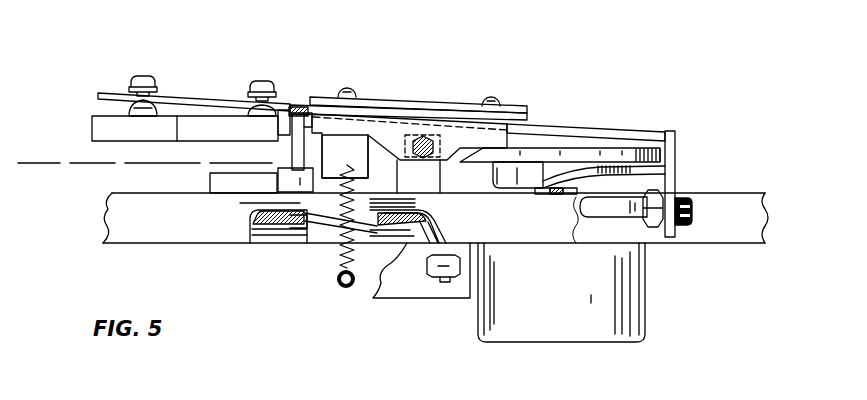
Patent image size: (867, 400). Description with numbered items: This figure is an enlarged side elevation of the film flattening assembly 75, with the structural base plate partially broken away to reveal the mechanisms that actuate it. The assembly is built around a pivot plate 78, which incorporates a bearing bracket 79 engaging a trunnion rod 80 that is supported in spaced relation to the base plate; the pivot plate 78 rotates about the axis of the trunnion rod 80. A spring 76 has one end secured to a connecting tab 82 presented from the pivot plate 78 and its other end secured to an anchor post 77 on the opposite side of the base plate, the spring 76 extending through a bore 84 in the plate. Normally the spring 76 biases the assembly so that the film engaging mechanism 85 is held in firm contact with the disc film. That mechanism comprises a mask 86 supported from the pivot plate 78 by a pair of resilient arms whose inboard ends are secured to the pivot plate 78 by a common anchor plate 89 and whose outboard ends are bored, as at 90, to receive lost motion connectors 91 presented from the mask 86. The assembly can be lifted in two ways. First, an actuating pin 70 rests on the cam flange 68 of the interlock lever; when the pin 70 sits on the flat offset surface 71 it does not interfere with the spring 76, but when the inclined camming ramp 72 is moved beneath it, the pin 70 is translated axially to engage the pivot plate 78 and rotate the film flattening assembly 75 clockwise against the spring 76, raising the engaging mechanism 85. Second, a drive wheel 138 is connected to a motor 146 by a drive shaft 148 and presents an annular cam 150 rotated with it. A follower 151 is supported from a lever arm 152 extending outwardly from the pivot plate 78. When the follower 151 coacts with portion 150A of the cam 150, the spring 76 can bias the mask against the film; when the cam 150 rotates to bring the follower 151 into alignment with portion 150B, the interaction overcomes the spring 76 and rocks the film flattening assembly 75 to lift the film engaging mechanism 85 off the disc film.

The film engaging mechanism 85 is at (206, 64).
The film flattening assembly 75 is at (614, 108).
The mask 86 is at (95, 128).
The bore 90 is at (126, 92).
The lost motion connectors 91 is at (140, 75).
The pivot plate 78 is at (297, 107).
The anchor plate 89 is at (413, 85).
The bearing bracket 79 is at (458, 133).
The connecting tab 82 is at (344, 185).
The trunnion rod 80 is at (430, 160).
The annular cam 150 is at (538, 168).
The lever arm 152 is at (677, 135).
The drive wheel 138 is at (645, 149).
The portion of the cam 150B is at (516, 188).
The portion of the cam 150A is at (600, 176).
The drive shaft 148 is at (561, 196).
The follower 151 is at (617, 218).
The motor 146 is at (646, 310).
The camming ramp 72 is at (291, 243).
The cam flange 68 is at (325, 242).
The flat offset surface 71 is at (380, 241).
The spring 76 is at (339, 265).
The anchor post 77 is at (346, 287).
The actuating pin 70 is at (290, 152).
The bore 84 is at (375, 203).